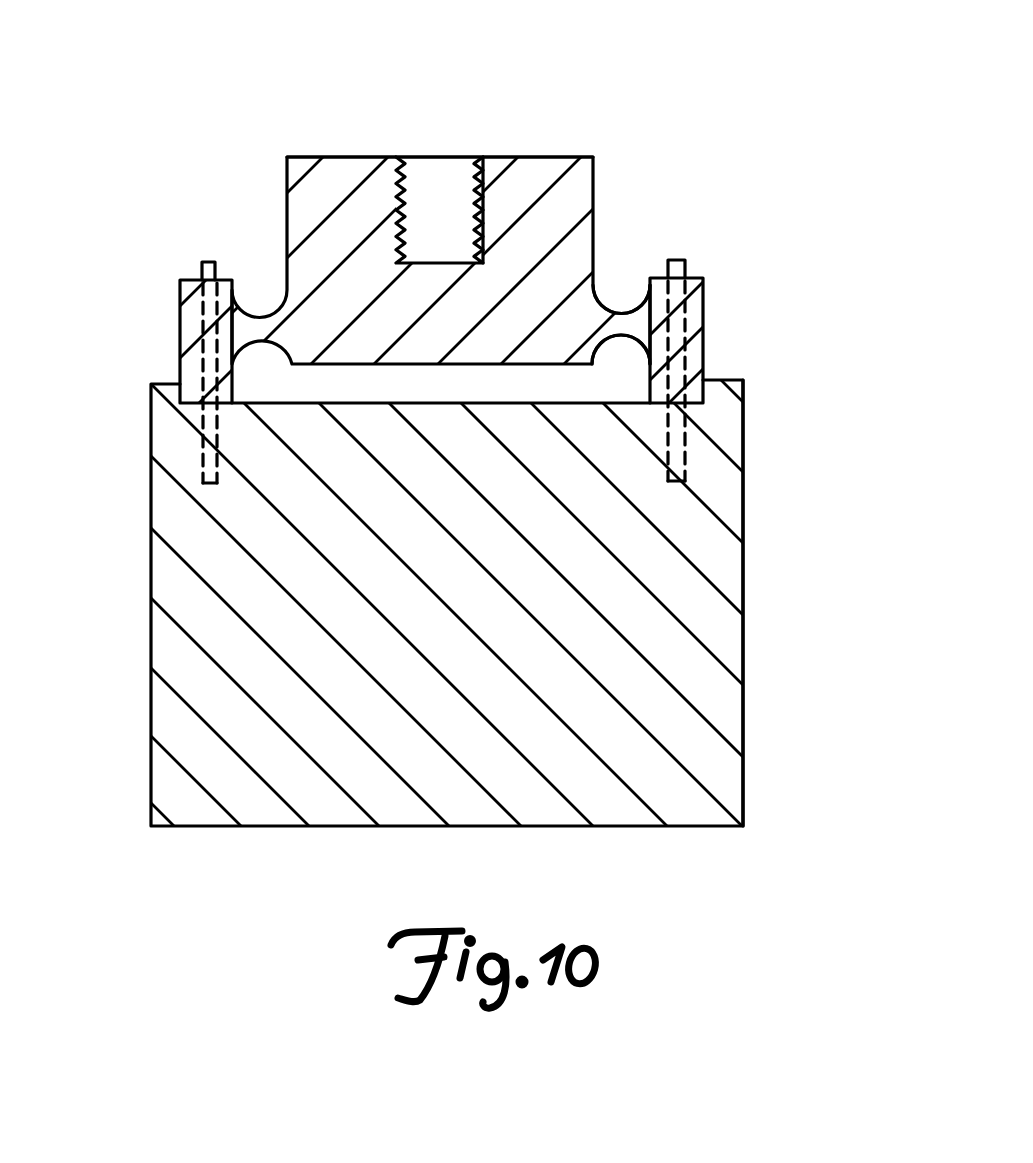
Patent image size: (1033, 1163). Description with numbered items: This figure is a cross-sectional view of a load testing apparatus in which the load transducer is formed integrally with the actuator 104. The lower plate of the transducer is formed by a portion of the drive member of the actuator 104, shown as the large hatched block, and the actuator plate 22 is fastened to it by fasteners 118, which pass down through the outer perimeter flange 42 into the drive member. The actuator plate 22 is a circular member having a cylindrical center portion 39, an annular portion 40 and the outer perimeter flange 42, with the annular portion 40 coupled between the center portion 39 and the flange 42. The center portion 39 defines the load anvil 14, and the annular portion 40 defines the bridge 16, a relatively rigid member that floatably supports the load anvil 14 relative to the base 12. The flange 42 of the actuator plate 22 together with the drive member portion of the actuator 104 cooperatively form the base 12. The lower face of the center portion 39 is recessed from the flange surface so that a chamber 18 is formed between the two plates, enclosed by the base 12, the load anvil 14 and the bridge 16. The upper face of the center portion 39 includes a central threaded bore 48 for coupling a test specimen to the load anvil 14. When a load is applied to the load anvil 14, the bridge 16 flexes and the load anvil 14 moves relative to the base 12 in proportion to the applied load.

The rigid base 12 is at (724, 684).
The load anvil 14 is at (347, 172).
The bridge 16 is at (626, 320).
The chamber 18 is at (372, 384).
The actuator plate 22 is at (618, 138).
The cylindrical center portion 39 is at (508, 173).
The annular portion 40 is at (628, 312).
The outer perimeter flange 42 is at (700, 332).
The central threaded bore 48 is at (451, 227).
The actuator 104 is at (743, 540).
The fasteners 118 is at (208, 262).